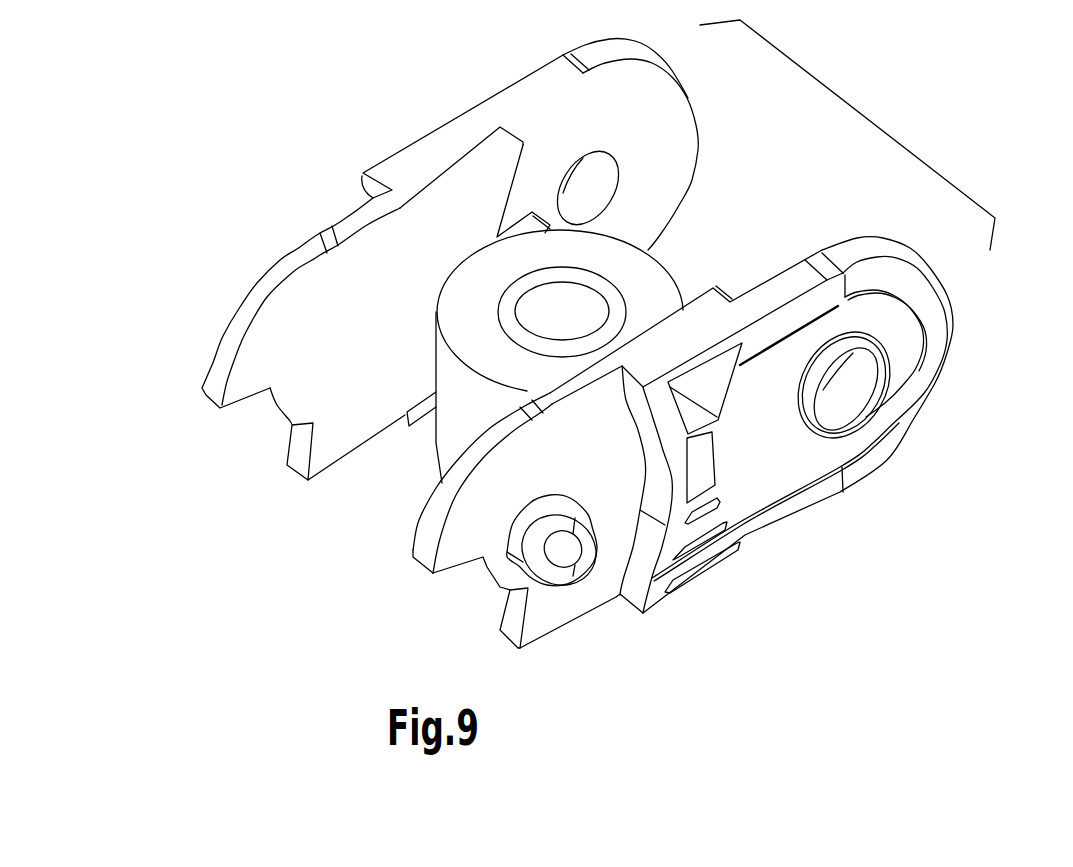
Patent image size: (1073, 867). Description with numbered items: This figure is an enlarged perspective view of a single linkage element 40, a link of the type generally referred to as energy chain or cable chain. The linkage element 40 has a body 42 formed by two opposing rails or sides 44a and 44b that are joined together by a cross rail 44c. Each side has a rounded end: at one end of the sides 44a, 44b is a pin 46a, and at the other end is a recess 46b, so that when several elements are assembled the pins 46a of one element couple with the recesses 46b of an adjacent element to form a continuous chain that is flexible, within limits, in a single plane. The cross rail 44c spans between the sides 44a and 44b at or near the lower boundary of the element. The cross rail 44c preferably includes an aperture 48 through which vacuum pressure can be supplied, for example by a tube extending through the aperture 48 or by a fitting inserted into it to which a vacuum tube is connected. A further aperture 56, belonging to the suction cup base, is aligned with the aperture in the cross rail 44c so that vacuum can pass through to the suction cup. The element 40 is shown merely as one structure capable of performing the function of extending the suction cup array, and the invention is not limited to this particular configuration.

The linkage element 40 is at (234, 600).
The body 42 is at (860, 112).
The side 44a is at (492, 259).
The side 44b is at (725, 476).
The cross rail 44c is at (427, 425).
The pin 46a is at (605, 188).
The recess 46b is at (858, 393).
The aperture 48 is at (544, 416).
The aperture 56 is at (576, 305).